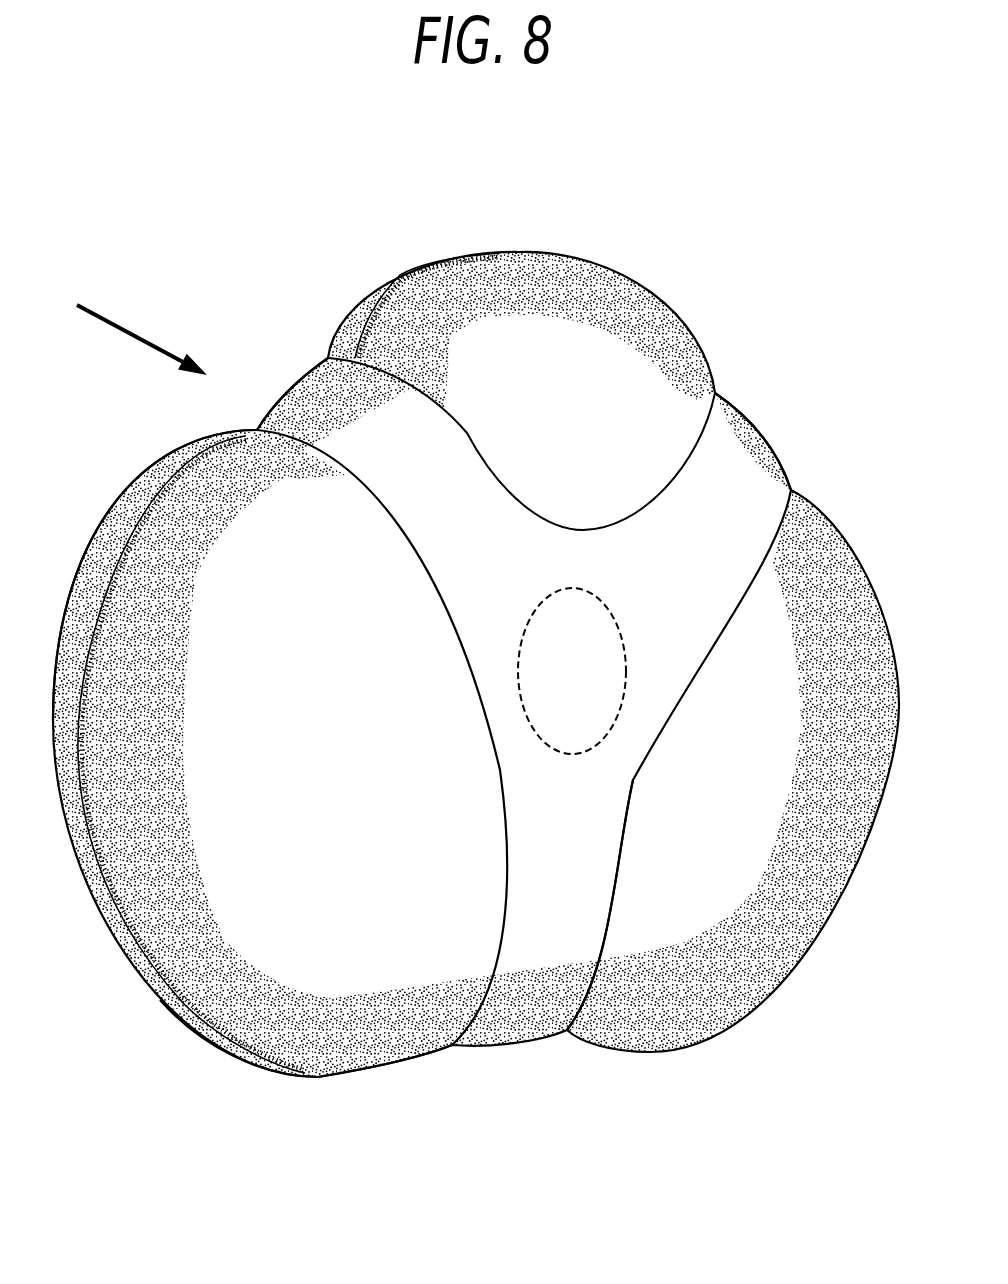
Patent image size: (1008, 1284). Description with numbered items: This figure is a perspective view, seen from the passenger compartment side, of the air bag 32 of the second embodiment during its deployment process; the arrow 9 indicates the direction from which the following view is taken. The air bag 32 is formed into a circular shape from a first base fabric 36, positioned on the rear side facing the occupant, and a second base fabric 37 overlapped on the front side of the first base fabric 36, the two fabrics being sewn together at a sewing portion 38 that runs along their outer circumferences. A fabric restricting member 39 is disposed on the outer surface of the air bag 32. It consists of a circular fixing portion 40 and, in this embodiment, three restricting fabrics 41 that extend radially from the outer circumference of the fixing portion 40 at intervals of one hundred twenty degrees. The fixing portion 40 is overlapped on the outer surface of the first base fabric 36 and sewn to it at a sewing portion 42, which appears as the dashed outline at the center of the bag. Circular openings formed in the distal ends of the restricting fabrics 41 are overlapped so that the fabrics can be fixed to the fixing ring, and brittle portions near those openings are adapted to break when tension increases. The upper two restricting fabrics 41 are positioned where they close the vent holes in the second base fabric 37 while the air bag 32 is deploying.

The section view direction arrow 9 is at (142, 317).
The air bag 32 is at (579, 256).
The first base fabric 36 is at (323, 1033).
The second base fabric 37 is at (127, 955).
The sewing portion 38 is at (96, 705).
The fabric restricting member 39 is at (449, 674).
The fixing portion 40 is at (660, 651).
The restricting fabric 41 is at (377, 483).
The sewing portion 42 is at (557, 758).